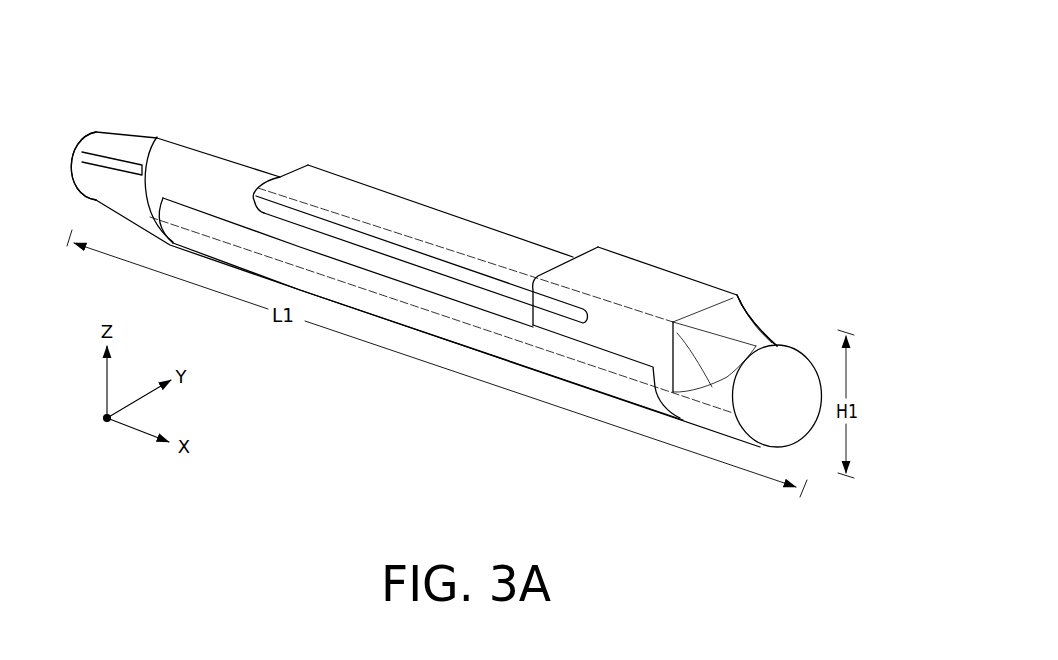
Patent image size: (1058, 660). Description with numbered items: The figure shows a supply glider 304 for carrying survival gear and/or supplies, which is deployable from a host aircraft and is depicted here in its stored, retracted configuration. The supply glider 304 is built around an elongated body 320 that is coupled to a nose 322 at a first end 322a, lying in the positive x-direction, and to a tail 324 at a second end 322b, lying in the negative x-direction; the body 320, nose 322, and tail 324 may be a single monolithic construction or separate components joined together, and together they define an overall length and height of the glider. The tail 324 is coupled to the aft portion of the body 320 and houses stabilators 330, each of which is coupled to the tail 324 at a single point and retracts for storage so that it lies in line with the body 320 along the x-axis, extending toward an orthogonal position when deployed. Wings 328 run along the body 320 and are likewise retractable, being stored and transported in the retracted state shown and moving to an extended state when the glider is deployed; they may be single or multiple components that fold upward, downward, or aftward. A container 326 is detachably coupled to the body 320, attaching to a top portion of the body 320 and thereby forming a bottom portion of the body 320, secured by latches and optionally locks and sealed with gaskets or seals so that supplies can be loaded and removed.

The supply glider 304 is at (90, 118).
The second end 322b is at (200, 97).
The stabilators 330 is at (98, 152).
The tail 324 is at (158, 139).
The wings 328 is at (503, 240).
The container 326 is at (402, 322).
The body 320 is at (668, 290).
The nose 322 is at (780, 360).
The first end 322a is at (825, 265).